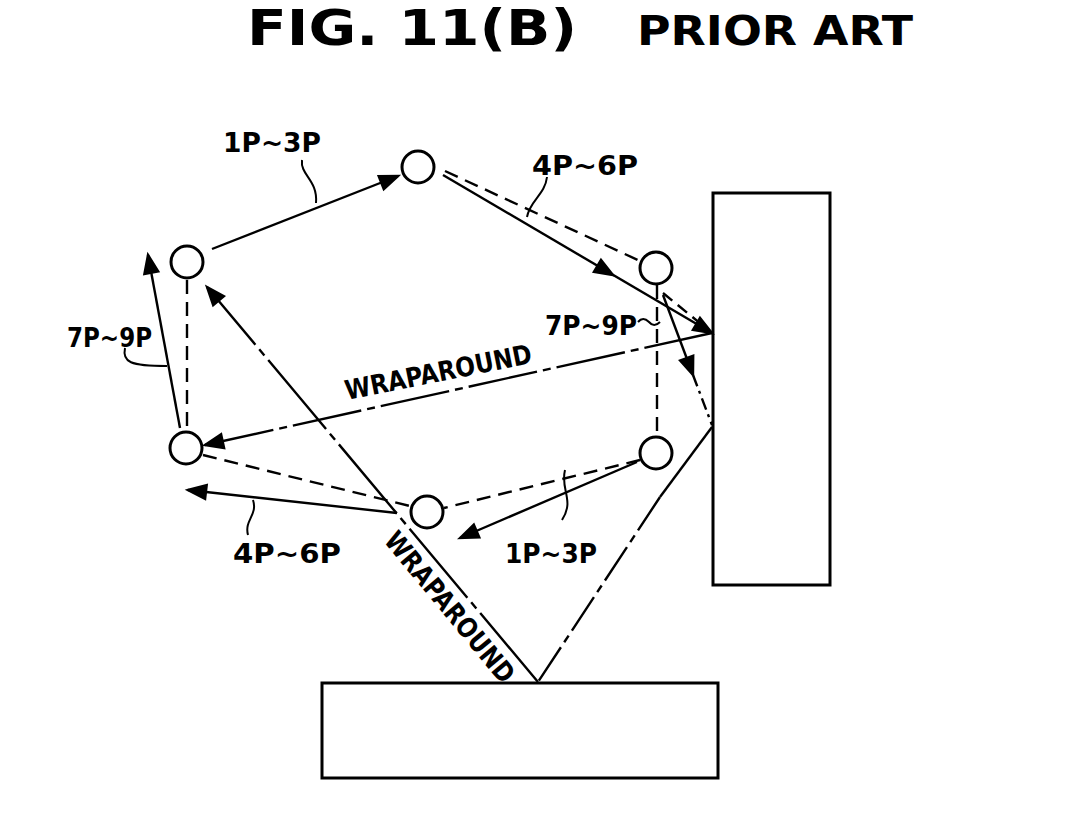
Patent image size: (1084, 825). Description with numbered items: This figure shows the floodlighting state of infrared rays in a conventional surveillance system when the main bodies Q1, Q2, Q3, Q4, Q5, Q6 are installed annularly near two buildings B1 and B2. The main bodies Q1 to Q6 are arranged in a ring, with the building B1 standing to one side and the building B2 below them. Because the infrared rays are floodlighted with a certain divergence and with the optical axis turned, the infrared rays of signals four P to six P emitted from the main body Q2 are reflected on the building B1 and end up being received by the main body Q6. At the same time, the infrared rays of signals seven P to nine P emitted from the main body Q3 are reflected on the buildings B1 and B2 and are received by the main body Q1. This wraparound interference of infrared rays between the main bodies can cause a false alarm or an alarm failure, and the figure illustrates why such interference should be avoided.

The main body Q1 is at (180, 244).
The main body Q2 is at (424, 150).
The main body Q3 is at (659, 247).
The main body Q4 is at (636, 442).
The main body Q5 is at (433, 494).
The main body Q6 is at (167, 465).
The building B1 is at (803, 412).
The building B2 is at (531, 760).